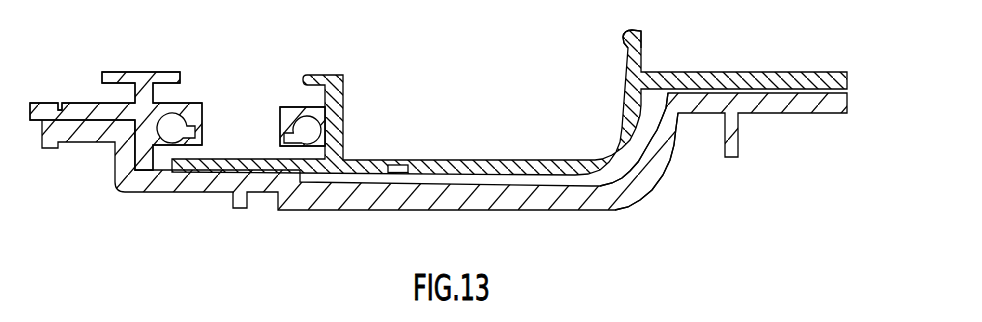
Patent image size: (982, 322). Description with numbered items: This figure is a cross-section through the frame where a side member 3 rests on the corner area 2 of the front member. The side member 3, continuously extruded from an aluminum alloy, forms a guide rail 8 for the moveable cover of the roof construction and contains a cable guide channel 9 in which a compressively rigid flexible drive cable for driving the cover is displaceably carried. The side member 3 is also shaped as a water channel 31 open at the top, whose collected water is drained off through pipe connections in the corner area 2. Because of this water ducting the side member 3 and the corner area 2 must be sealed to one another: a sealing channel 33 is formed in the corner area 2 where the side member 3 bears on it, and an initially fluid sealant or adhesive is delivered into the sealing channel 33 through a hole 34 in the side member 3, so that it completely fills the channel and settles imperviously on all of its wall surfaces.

The corner area 2 is at (638, 173).
The side member 3 is at (645, 54).
The guide rail 8 is at (132, 92).
The cable guide channel 9 is at (310, 132).
The water channel 31 is at (488, 158).
The sealing channel 33 is at (600, 183).
The hole 34 is at (400, 167).